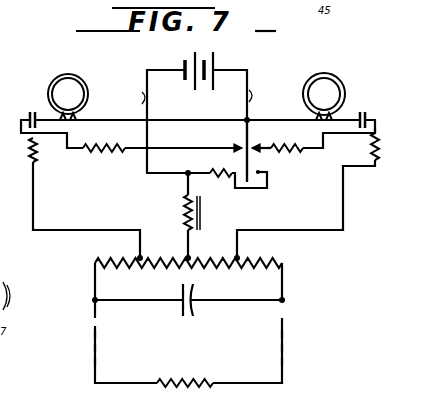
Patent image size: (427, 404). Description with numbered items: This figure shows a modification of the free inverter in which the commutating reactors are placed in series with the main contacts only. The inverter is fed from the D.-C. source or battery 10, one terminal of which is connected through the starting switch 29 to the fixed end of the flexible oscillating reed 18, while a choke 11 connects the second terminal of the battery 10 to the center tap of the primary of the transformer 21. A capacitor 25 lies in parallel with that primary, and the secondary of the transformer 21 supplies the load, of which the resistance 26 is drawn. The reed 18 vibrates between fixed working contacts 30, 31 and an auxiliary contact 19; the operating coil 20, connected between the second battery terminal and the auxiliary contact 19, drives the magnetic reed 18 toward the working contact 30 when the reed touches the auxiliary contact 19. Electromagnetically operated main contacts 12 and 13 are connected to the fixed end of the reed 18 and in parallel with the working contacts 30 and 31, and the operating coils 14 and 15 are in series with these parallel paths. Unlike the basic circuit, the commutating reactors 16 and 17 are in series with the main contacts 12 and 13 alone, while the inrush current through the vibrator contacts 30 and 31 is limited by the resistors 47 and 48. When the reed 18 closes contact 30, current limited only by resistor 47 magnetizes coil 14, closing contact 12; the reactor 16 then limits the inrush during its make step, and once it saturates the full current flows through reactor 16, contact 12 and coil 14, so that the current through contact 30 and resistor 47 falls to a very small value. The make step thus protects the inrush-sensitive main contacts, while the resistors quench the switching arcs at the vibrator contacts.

The battery 10 is at (220, 60).
The choke 11 is at (206, 213).
The electromagnetically operated contact 12 is at (36, 108).
The electromagnetically operated contact 13 is at (379, 110).
The operating coil 14 is at (27, 150).
The operating coil 15 is at (382, 150).
The commutating reactor 16 is at (80, 73).
The commutating reactor 17 is at (350, 73).
The flexible oscillating reed 18 is at (252, 132).
The auxiliary contact 19 is at (260, 163).
The operating coil 20 is at (230, 170).
The transformer 21 is at (270, 258).
The capacitor 25 is at (196, 310).
The resistance 26 is at (190, 380).
The starting switch 29 is at (140, 97).
The working contact 30 is at (237, 147).
The working contact 31 is at (276, 147).
The resistor 47 is at (106, 152).
The resistor 48 is at (292, 152).